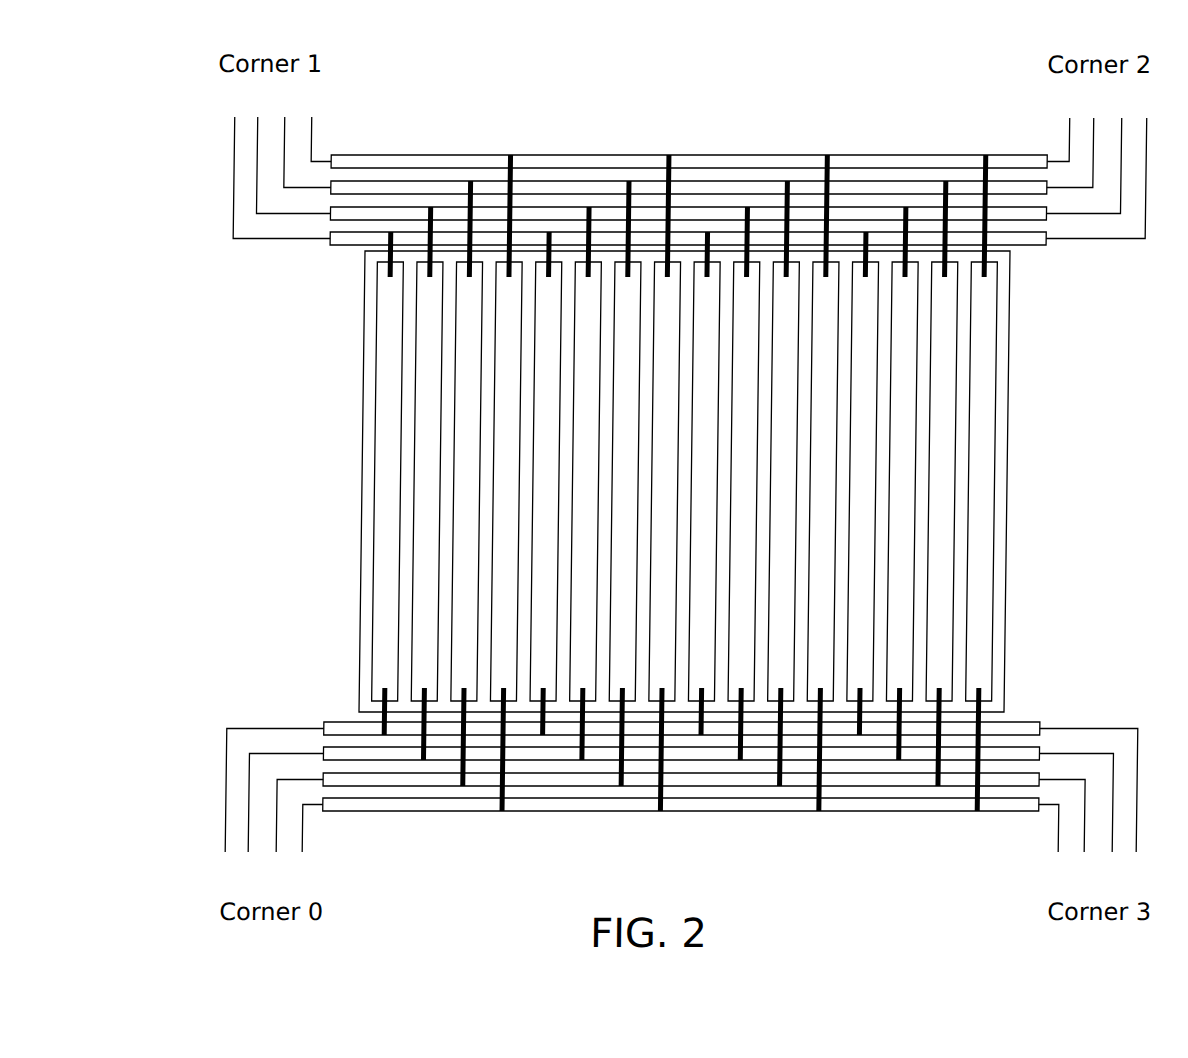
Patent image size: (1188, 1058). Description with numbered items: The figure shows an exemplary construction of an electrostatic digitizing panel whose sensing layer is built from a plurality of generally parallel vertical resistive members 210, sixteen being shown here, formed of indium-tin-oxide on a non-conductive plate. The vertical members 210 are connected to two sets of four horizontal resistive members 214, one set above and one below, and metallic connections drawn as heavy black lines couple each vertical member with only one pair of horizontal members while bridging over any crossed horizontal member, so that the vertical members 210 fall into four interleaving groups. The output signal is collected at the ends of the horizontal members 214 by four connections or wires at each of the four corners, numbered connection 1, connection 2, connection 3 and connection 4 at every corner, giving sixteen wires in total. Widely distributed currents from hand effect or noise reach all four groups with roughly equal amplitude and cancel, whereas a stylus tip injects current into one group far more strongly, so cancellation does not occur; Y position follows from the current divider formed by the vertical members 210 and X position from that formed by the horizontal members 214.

The connection 1 is at (684, 487).
The connection 2 is at (683, 487).
The connection 3 is at (682, 487).
The connection 4 is at (684, 487).
The vertical resistive member 210 is at (707, 387).
The horizontal resistive member 214 is at (1008, 163).